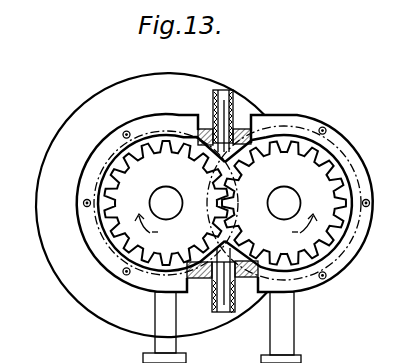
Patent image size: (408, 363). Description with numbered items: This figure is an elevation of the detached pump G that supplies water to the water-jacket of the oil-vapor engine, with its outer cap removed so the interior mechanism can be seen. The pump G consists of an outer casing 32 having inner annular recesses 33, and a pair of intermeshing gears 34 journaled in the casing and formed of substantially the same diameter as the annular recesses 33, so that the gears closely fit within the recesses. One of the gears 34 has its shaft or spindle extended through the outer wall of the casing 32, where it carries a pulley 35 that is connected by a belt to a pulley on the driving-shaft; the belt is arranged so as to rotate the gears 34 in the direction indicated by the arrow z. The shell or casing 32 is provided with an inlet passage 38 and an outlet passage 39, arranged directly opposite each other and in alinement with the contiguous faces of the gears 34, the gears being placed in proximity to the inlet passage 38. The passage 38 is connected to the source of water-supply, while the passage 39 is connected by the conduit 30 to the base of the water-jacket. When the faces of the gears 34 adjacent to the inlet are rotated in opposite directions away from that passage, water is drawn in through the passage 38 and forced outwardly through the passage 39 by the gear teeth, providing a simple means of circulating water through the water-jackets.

The conduit 30 is at (227, 103).
The outer casing 32 is at (362, 187).
The inner annular recesses 33 is at (83, 201).
The intermeshing gears 34 is at (163, 152).
The pulley 35 is at (125, 86).
The inlet passage 38 is at (245, 292).
The outlet passage 39 is at (243, 132).
The pump G is at (328, 163).
The arrow z is at (226, 227).